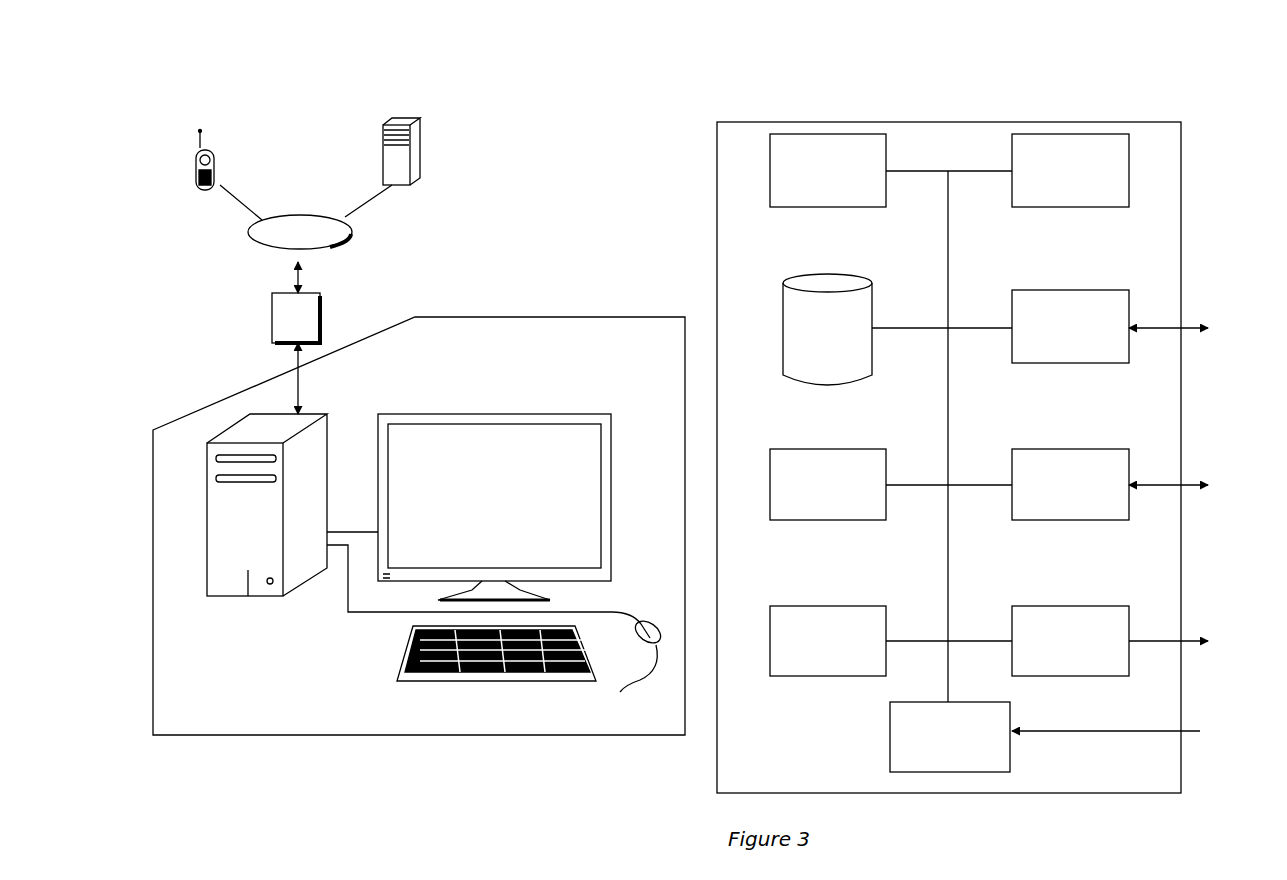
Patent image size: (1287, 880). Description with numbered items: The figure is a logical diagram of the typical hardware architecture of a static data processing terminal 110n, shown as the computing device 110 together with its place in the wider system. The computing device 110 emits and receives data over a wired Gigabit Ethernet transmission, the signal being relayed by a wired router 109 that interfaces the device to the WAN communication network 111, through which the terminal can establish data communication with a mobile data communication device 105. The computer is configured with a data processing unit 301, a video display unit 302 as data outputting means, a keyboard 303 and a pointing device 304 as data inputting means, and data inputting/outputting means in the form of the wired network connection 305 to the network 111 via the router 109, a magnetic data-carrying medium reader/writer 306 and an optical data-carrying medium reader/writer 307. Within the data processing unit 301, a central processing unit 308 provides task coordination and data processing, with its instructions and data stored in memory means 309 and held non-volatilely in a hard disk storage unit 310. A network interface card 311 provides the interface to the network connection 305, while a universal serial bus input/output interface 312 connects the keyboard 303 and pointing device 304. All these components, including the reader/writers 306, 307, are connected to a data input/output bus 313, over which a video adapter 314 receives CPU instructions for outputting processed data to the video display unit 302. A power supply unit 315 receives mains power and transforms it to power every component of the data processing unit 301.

The mobile data communication device 105 is at (197, 170).
The wired router 109 is at (310, 300).
The computing device 110 is at (396, 120).
The data processing terminal 110n is at (572, 716).
The WAN communication network 111 is at (352, 232).
The data processing unit 301 is at (250, 596).
The video display unit 302 is at (513, 418).
The keyboard 303 is at (398, 668).
The pointing device 304 is at (634, 668).
The wired network connection 305 is at (295, 392).
The magnetic data-carrying medium reader/writer 306 is at (248, 455).
The optical data-carrying medium reader/writer 307 is at (240, 483).
The central processing unit 308 is at (788, 150).
The memory means 309 is at (1115, 150).
The hard disk storage unit 310 is at (810, 296).
The network interface card 311 is at (1115, 305).
The universal serial bus input/output interface 312 is at (1115, 462).
The data input/output bus 313 is at (948, 400).
The video adapter 314 is at (1115, 618).
The power supply unit 315 is at (900, 736).